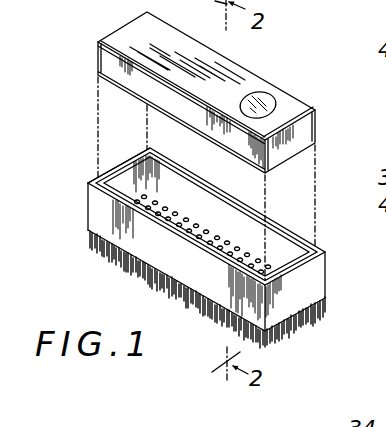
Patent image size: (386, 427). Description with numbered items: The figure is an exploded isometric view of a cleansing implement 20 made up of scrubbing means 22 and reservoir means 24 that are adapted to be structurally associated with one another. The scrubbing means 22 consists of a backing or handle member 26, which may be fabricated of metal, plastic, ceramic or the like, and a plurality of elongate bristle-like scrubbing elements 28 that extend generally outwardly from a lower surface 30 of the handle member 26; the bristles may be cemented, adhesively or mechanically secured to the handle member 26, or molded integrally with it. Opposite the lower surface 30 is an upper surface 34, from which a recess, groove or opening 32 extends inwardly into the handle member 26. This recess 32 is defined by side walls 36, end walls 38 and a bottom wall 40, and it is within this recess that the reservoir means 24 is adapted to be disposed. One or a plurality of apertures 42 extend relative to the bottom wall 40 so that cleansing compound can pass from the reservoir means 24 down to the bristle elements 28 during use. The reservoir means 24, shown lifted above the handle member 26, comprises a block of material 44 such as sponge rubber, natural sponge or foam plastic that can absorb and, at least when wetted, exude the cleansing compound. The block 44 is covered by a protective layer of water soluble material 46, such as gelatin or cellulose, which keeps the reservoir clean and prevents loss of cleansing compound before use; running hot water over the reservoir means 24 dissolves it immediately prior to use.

The cleansing implement 20 is at (80, 120).
The scrubbing means 22 is at (328, 275).
The reservoir means 24 is at (320, 135).
The backing or handle member 26 is at (95, 216).
The bristle-like scrubbing elements 28 is at (316, 323).
The lower surface 30 is at (324, 298).
The recess, groove or opening 32 is at (291, 240).
The upper surface 34 is at (93, 181).
The side walls 36 is at (218, 207).
The end walls 38 is at (128, 173).
The bottom wall 40 is at (244, 240).
The apertures 42 is at (170, 207).
The block of material 44 is at (272, 98).
The layer of water soluble material 46 is at (237, 75).